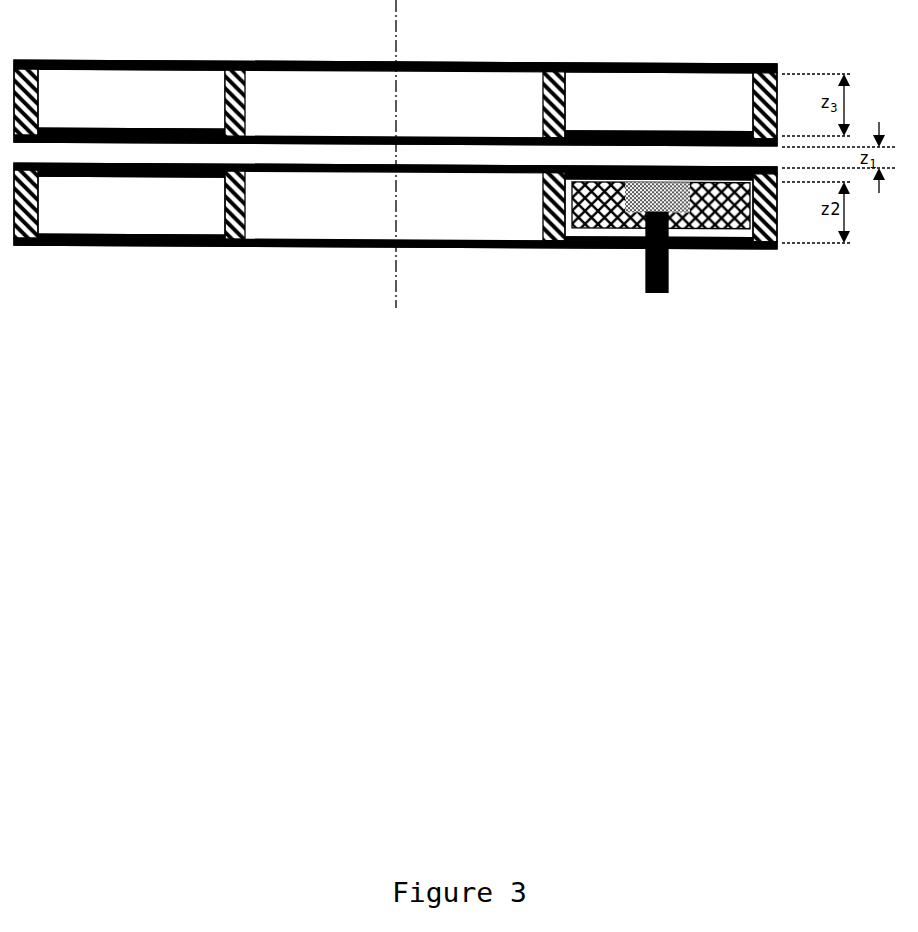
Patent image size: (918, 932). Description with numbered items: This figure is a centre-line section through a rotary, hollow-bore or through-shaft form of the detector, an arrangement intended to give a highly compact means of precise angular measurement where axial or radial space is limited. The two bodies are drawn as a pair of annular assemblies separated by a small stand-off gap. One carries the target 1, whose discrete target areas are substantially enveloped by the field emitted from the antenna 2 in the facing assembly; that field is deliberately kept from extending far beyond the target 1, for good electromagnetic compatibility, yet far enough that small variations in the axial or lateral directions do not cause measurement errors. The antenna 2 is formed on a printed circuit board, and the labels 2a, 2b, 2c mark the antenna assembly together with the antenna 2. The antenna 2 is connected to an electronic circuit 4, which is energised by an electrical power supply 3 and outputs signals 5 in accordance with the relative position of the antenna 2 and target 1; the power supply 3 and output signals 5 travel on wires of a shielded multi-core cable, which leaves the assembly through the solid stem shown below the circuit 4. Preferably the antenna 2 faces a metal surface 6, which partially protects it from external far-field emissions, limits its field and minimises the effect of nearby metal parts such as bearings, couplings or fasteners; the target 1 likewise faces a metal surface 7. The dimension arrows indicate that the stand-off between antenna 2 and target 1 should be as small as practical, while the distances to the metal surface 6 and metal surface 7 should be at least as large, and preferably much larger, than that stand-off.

The target 1 is at (72, 142).
The output signals 5 is at (72, 142).
The antenna 2 is at (395, 411).
The first layer of second substrate 2a is at (142, 177).
The second layer of second substrate 2b is at (142, 177).
The third layer of second substrate 2c is at (142, 177).
The electrical power supply 3 is at (652, 292).
The electronic circuit 4 is at (625, 228).
The metal surface 6 is at (210, 245).
The metal surface 7 is at (245, 112).